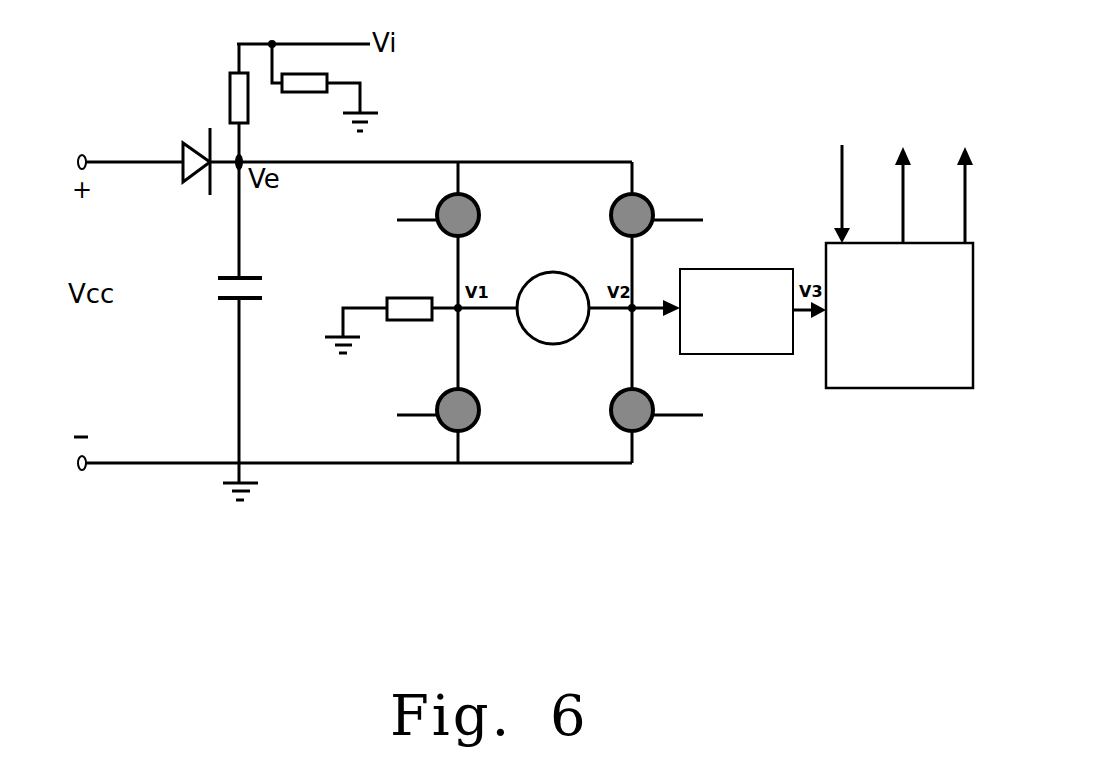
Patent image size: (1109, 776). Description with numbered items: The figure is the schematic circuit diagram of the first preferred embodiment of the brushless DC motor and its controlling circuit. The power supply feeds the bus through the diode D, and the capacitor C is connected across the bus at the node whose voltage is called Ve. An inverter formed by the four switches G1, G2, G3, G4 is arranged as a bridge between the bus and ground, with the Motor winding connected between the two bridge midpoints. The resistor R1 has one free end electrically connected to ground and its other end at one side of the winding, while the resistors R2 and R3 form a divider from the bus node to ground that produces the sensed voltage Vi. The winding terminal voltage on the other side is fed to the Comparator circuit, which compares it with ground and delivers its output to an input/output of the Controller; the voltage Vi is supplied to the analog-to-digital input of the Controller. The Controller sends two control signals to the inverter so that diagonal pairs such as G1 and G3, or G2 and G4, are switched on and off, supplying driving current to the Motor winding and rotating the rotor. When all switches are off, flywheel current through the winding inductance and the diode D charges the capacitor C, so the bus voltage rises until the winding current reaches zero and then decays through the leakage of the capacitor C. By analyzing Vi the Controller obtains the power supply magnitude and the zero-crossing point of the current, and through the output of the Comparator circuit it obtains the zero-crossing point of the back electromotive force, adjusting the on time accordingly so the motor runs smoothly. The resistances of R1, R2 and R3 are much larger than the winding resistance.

The diode D is at (178, 161).
The capacitor C is at (225, 331).
The resistor R1 is at (391, 316).
The resistor R2 is at (285, 101).
The resistor R3 is at (325, 87).
The switch G1 is at (452, 215).
The switch G2 is at (645, 215).
The switch G3 is at (648, 410).
The switch G4 is at (452, 410).
The motor Motor is at (569, 308).
The comparator circuit Comparator is at (753, 311).
The controller Controller is at (890, 266).